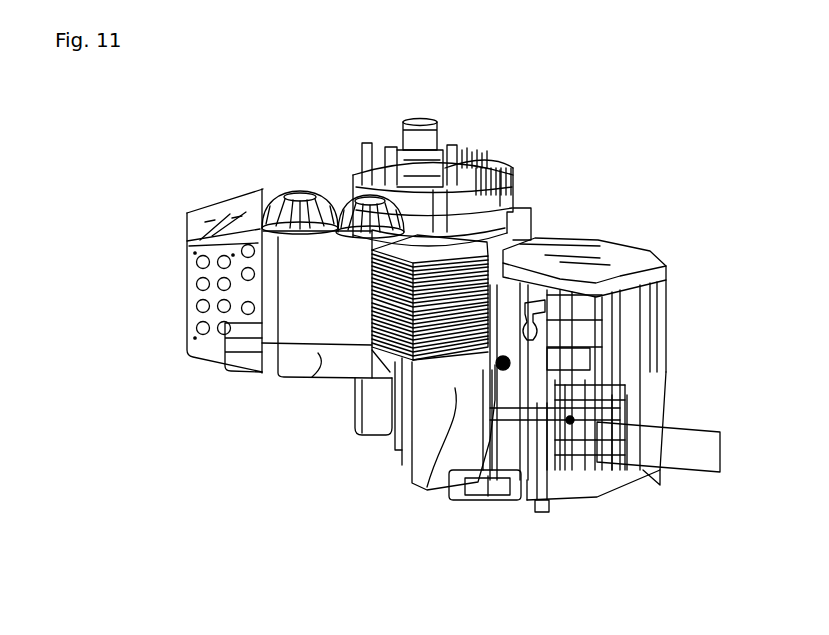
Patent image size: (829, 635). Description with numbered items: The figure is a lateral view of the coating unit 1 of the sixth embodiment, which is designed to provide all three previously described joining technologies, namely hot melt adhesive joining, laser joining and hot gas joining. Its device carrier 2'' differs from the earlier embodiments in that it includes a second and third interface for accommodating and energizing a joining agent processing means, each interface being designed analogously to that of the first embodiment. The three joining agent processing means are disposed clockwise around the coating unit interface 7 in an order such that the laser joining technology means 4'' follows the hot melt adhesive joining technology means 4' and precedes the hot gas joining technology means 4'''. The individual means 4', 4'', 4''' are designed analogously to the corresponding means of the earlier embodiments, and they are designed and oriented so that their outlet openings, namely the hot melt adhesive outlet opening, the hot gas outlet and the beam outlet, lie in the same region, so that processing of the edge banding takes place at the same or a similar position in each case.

The coating unit 1 is at (133, 165).
The coating unit interface 7 is at (418, 140).
The device carrier 2'' is at (598, 325).
The hot melt adhesive joining technology means 4' is at (473, 432).
The laser joining technology means 4'' is at (419, 453).
The hot gas joining technology means 4''' is at (307, 327).